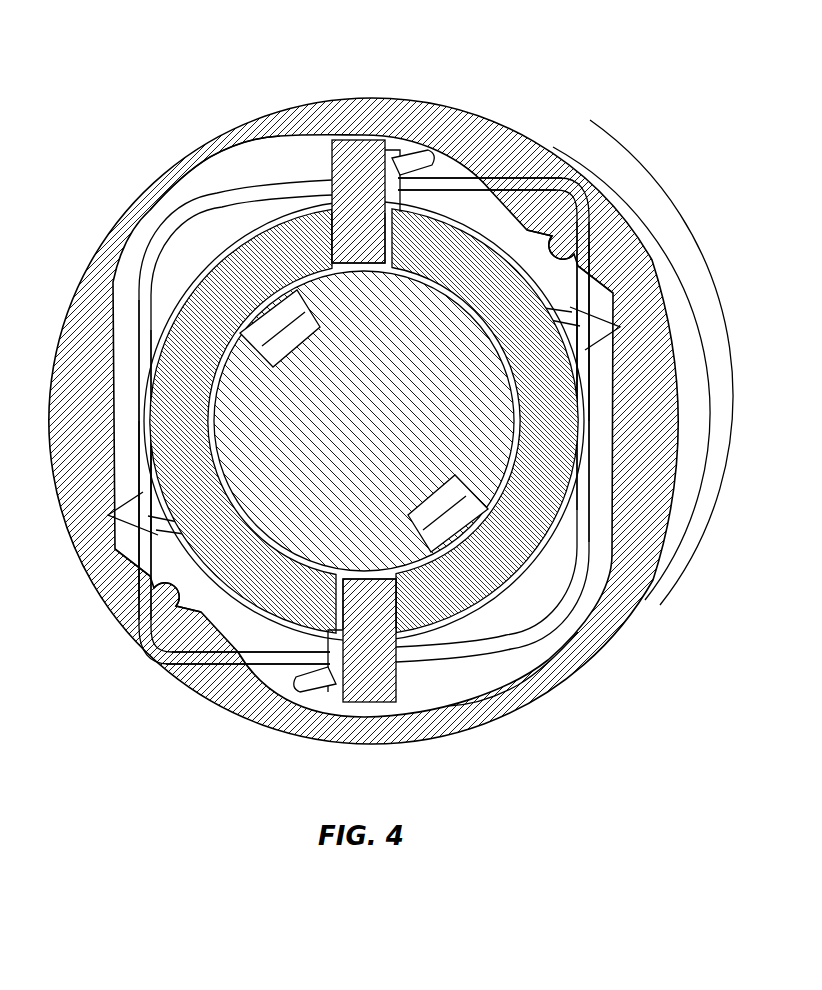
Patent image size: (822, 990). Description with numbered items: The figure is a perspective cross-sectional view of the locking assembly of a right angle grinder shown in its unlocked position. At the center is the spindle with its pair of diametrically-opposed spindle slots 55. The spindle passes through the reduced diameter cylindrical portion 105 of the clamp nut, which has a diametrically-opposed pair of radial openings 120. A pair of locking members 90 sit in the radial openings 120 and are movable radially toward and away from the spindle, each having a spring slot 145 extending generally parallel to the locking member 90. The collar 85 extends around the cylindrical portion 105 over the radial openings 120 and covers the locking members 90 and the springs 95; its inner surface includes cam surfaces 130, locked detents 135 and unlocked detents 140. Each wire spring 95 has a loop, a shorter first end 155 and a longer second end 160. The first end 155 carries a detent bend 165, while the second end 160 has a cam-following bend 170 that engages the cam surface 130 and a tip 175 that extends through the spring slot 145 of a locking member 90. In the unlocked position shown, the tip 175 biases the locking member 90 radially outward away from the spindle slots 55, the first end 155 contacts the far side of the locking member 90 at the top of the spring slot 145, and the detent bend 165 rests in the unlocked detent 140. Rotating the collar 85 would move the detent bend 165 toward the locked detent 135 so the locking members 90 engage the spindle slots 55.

The spindle slot 55 is at (267, 345).
The collar 85 is at (530, 140).
The locking member 90 is at (360, 165).
The spring 95 is at (133, 337).
The cylindrical portion 105 is at (465, 275).
The radial opening 120 is at (348, 240).
The cam surface 130 is at (128, 283).
The locked detent 135 is at (575, 244).
The unlocked detent 140 is at (622, 332).
The spring slot 145 is at (452, 172).
The first end 155 is at (117, 455).
The second end 160 is at (267, 180).
The detent bend 165 is at (612, 287).
The cam-following bend 170 is at (157, 227).
The tip 175 is at (412, 152).